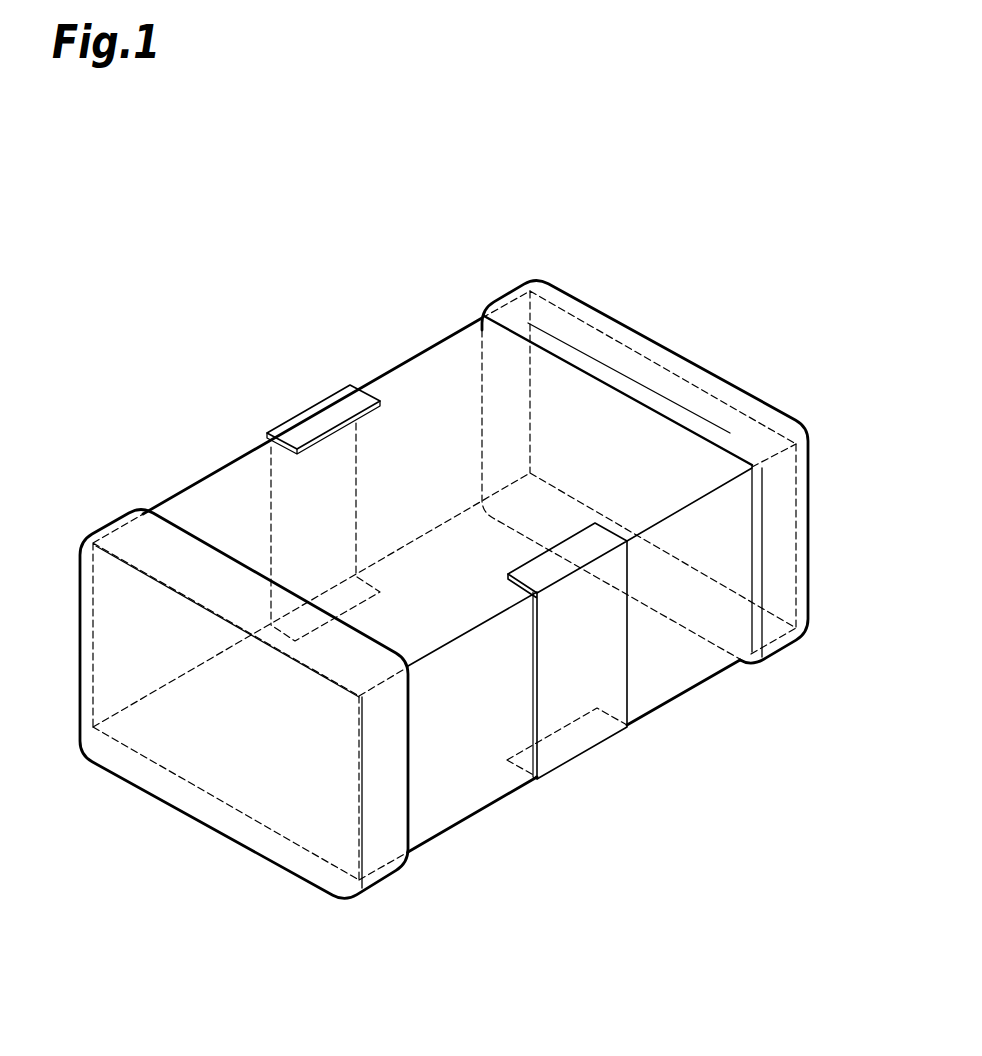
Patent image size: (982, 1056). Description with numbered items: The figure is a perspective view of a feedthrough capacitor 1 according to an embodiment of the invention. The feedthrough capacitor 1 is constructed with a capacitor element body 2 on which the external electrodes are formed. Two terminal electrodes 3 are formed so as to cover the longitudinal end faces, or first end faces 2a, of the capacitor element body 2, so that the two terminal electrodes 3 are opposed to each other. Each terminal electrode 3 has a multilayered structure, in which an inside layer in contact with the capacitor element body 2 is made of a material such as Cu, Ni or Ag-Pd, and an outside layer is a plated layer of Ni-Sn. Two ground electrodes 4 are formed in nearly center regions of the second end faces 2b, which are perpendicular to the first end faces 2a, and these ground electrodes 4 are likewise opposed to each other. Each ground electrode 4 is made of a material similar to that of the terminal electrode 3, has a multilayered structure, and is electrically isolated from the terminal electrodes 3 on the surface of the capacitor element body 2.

The feedthrough capacitor 1 is at (741, 239).
The capacitor element body 2 is at (218, 450).
The first end face 2a is at (668, 388).
The second end face 2b is at (426, 376).
The terminal electrode 3 is at (537, 274).
The ground electrode 4 is at (309, 413).